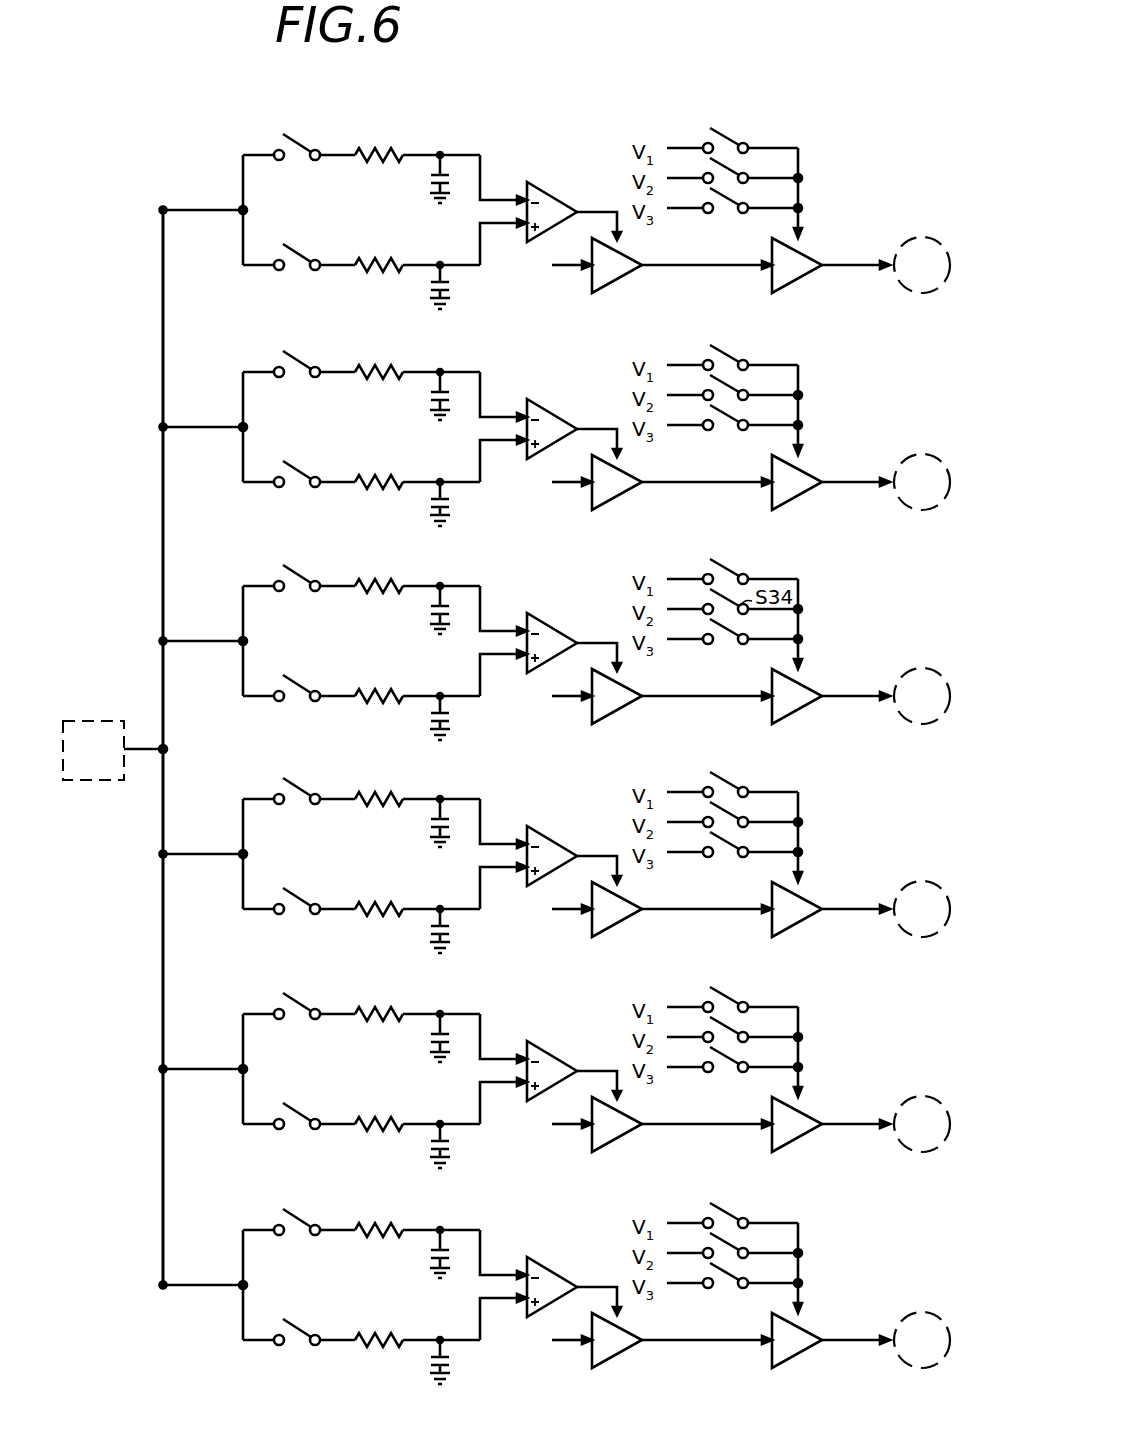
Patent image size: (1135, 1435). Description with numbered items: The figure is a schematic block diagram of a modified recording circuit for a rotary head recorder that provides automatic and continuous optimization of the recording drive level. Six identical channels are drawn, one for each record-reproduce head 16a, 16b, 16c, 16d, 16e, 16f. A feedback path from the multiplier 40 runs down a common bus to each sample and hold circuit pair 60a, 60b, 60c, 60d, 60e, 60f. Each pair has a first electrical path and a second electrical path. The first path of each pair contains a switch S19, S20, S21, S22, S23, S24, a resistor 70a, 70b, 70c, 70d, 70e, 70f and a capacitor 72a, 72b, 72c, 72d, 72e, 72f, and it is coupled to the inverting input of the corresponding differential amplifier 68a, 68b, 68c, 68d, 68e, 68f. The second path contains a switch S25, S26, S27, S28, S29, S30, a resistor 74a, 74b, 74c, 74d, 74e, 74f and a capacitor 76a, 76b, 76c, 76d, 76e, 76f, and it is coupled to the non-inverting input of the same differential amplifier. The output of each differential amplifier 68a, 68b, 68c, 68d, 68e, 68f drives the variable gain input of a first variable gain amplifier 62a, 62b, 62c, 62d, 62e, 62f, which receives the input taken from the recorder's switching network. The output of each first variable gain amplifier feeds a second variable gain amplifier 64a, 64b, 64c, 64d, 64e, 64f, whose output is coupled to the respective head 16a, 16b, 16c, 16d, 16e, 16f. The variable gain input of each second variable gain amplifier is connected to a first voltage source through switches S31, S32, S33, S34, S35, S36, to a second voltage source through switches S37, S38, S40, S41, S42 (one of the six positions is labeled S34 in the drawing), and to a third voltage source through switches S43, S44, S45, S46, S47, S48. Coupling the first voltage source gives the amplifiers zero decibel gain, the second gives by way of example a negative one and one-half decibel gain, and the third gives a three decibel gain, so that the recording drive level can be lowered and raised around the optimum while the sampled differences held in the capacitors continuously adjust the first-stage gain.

The multiplier 40 is at (108, 720).
The sample and hold circuit pair 60a is at (258, 299).
The sample and hold circuit pair 60b is at (352, 460).
The sample and hold circuit pair 60c is at (352, 674).
The sample and hold circuit pair 60d is at (352, 887).
The sample and hold circuit pair 60e is at (352, 1102).
The sample and hold circuit pair 60f is at (351, 1301).
The switch S19 is at (292, 137).
The switch S20 is at (301, 359).
The switch S21 is at (301, 573).
The switch S22 is at (301, 786).
The switch S23 is at (301, 1001).
The switch S24 is at (301, 1217).
The switch S25 is at (294, 238).
The switch S26 is at (302, 464).
The switch S27 is at (302, 678).
The switch S28 is at (302, 891).
The switch S29 is at (302, 1106).
The switch S30 is at (302, 1322).
The switch S31 is at (740, 145).
The switch S32 is at (750, 355).
The switch S33 is at (750, 569).
The switch S34 is at (750, 782).
The switch S35 is at (750, 997).
The switch S36 is at (750, 1213).
The switch S37 is at (740, 175).
The switch S38 is at (750, 385).
The switch S40 is at (750, 812).
The switch S41 is at (750, 1027).
The switch S42 is at (750, 1243).
The switch S43 is at (740, 205).
The switch S44 is at (750, 415).
The switch S45 is at (750, 629).
The switch S46 is at (750, 842).
The switch S47 is at (750, 1057).
The switch S48 is at (750, 1273).
The resistor 70a is at (373, 150).
The resistor 70b is at (388, 359).
The resistor 70c is at (387, 573).
The resistor 70d is at (388, 786).
The resistor 70e is at (388, 1001).
The resistor 70f is at (385, 1217).
The capacitor 72a is at (430, 179).
The capacitor 72b is at (411, 394).
The capacitor 72c is at (411, 608).
The capacitor 72d is at (411, 821).
The capacitor 72e is at (411, 1036).
The capacitor 72f is at (411, 1252).
The resistor 74a is at (372, 257).
The resistor 74b is at (382, 465).
The resistor 74c is at (381, 679).
The resistor 74d is at (382, 892).
The resistor 74e is at (382, 1107).
The resistor 74f is at (380, 1323).
The capacitor 76a is at (450, 290).
The capacitor 76b is at (465, 502).
The capacitor 76c is at (464, 716).
The capacitor 76d is at (465, 929).
The capacitor 76e is at (465, 1144).
The capacitor 76f is at (462, 1360).
The differential amplifier 68a is at (556, 188).
The differential amplifier 68b is at (574, 426).
The differential amplifier 68c is at (574, 640).
The differential amplifier 68d is at (574, 853).
The differential amplifier 68e is at (574, 1068).
The differential amplifier 68f is at (574, 1284).
The first variable gain amplifier 62a is at (612, 286).
The first variable gain amplifier 62b is at (654, 489).
The first variable gain amplifier 62c is at (654, 703).
The first variable gain amplifier 62d is at (654, 916).
The first variable gain amplifier 62e is at (654, 1131).
The first variable gain amplifier 62f is at (654, 1347).
The second variable gain amplifier 64a is at (800, 286).
The second variable gain amplifier 64b is at (831, 489).
The second variable gain amplifier 64c is at (831, 703).
The second variable gain amplifier 64d is at (831, 916).
The second variable gain amplifier 64e is at (831, 1131).
The second variable gain amplifier 64f is at (831, 1347).
The record-reproduce head 16a is at (907, 237).
The record-reproduce head 16b is at (922, 465).
The record-reproduce head 16c is at (922, 679).
The record-reproduce head 16d is at (922, 892).
The record-reproduce head 16e is at (922, 1107).
The record-reproduce head 16f is at (922, 1323).